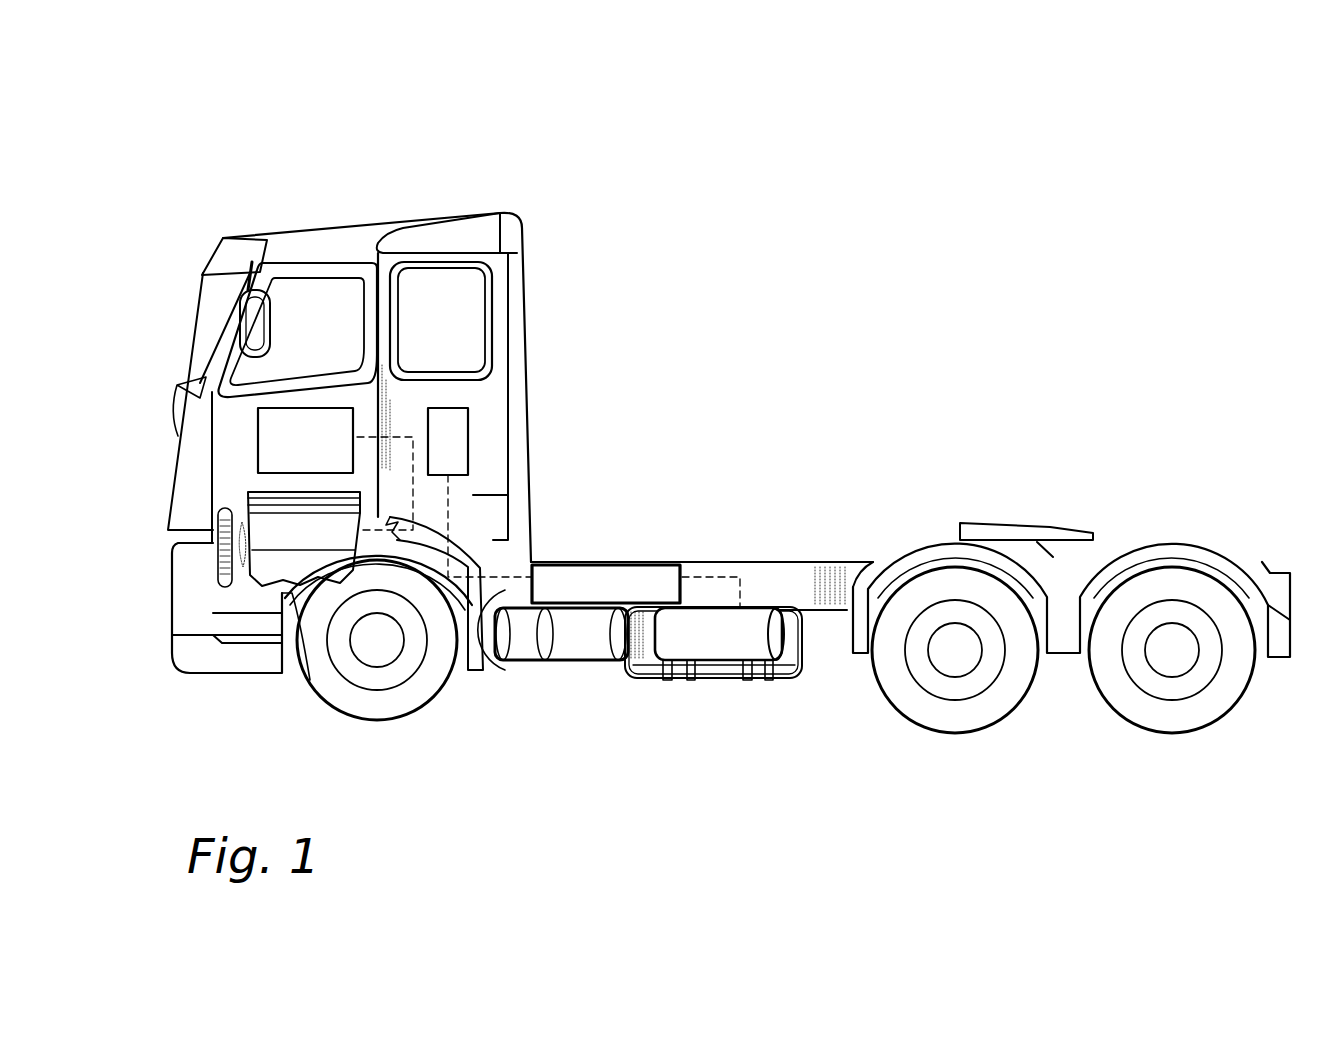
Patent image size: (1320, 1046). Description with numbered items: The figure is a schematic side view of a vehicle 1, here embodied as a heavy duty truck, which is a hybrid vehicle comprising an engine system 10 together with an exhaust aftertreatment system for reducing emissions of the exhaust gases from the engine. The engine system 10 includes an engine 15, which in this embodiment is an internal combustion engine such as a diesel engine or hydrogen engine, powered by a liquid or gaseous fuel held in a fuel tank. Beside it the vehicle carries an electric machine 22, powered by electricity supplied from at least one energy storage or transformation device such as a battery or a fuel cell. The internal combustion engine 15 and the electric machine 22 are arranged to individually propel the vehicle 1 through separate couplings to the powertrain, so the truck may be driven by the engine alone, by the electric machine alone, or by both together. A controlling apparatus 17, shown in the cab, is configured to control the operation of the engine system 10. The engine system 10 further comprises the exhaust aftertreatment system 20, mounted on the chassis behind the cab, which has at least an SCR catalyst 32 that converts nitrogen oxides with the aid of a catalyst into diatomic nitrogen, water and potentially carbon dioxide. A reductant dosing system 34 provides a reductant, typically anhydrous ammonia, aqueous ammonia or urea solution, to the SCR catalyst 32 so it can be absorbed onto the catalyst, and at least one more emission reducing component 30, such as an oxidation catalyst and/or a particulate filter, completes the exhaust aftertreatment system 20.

The vehicle 1 is at (225, 133).
The engine system 10 is at (542, 516).
The engine 15 is at (263, 577).
The controlling apparatus 17 is at (470, 438).
The exhaust aftertreatment system 20 is at (517, 733).
The electric machine 22 is at (258, 442).
The emission reducing component 30 is at (612, 655).
The SCR catalyst 32 is at (718, 637).
The reductant dosing system 34 is at (662, 562).